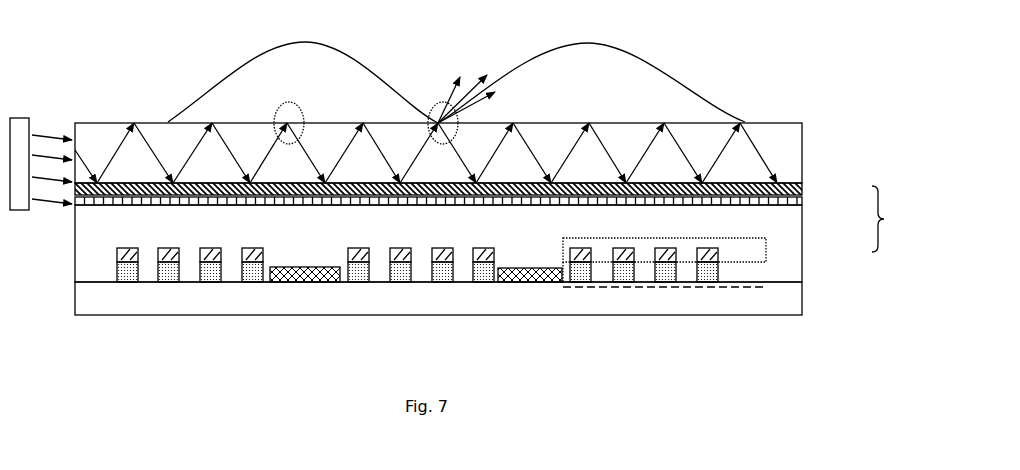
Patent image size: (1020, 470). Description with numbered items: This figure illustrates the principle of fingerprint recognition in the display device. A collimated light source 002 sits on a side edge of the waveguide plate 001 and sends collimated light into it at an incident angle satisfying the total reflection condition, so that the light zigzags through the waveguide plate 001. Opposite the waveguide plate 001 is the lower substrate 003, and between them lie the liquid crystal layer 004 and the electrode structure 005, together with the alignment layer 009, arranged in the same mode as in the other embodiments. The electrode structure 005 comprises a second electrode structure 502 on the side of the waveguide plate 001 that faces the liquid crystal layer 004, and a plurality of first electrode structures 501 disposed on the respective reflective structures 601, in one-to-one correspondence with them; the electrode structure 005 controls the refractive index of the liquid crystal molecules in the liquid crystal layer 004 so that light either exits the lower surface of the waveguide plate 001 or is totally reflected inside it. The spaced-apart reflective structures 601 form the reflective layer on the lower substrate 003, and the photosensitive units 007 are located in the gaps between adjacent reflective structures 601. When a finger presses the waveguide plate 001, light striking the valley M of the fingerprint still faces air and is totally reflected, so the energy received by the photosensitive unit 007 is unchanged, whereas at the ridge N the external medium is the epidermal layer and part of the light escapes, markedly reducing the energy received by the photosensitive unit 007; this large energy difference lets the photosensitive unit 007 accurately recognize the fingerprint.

The waveguide plate 001 is at (802, 152).
The collimated light source 002 is at (20, 118).
The lower substrate 003 is at (802, 297).
The liquid crystal layer 004 is at (75, 258).
The electrode structure 005 is at (895, 219).
The photosensitive unit 007 is at (301, 282).
The alignment layer 009 is at (92, 203).
The first electrode structure 501 is at (766, 248).
The second electrode structure 502 is at (802, 190).
The reflective structure 601 is at (766, 262).